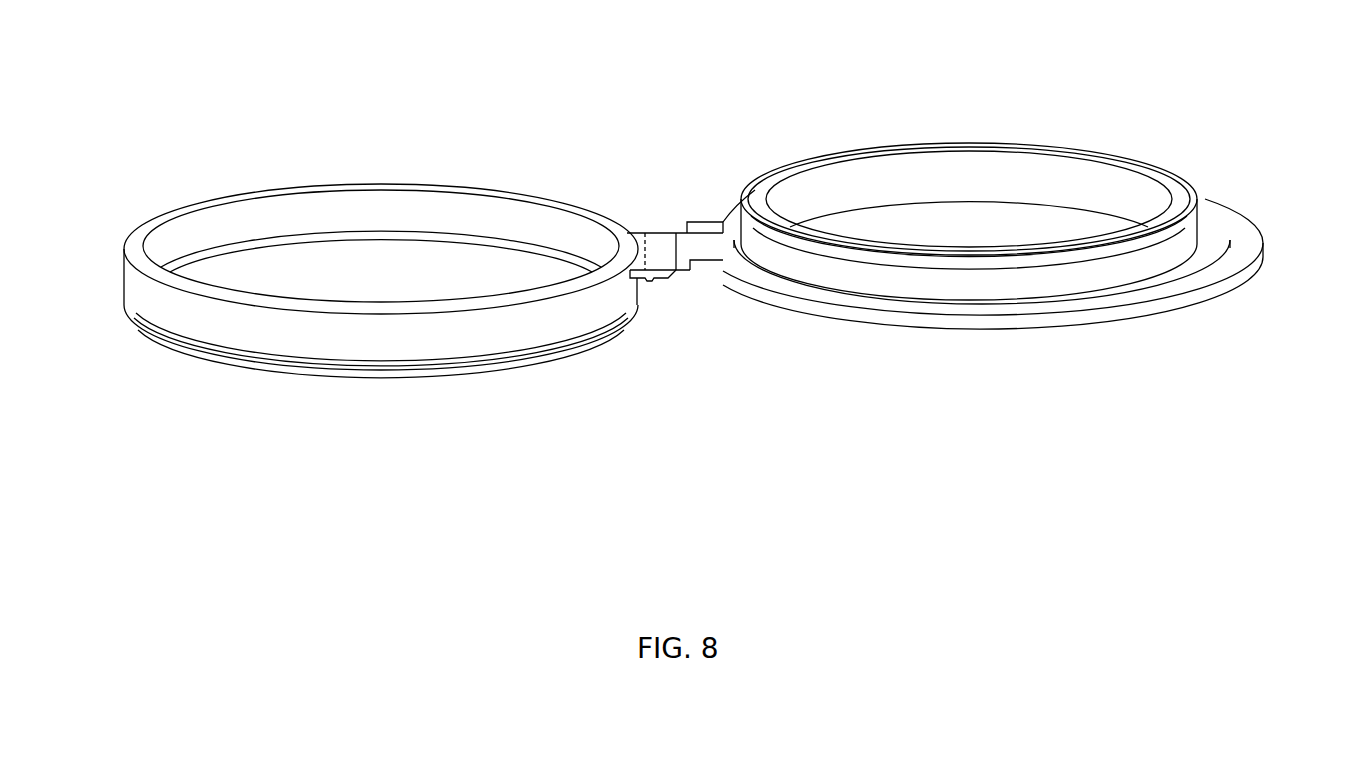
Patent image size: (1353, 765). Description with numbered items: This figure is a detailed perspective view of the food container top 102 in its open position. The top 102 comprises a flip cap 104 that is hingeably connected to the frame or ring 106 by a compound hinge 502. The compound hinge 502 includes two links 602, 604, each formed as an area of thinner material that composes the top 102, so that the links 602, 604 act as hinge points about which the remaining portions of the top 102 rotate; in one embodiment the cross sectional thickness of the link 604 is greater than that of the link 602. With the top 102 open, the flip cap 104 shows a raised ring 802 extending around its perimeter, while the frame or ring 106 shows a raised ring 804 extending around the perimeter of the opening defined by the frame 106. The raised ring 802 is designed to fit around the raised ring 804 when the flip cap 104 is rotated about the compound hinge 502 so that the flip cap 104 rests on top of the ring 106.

The food container top 102 is at (1024, 194).
The flip cap 104 is at (368, 183).
The frame or ring 106 is at (1240, 212).
The compound hinge 502 is at (667, 287).
The link 602 is at (678, 232).
The link 604 is at (645, 233).
The raised ring 802 is at (185, 210).
The raised ring 804 is at (988, 143).